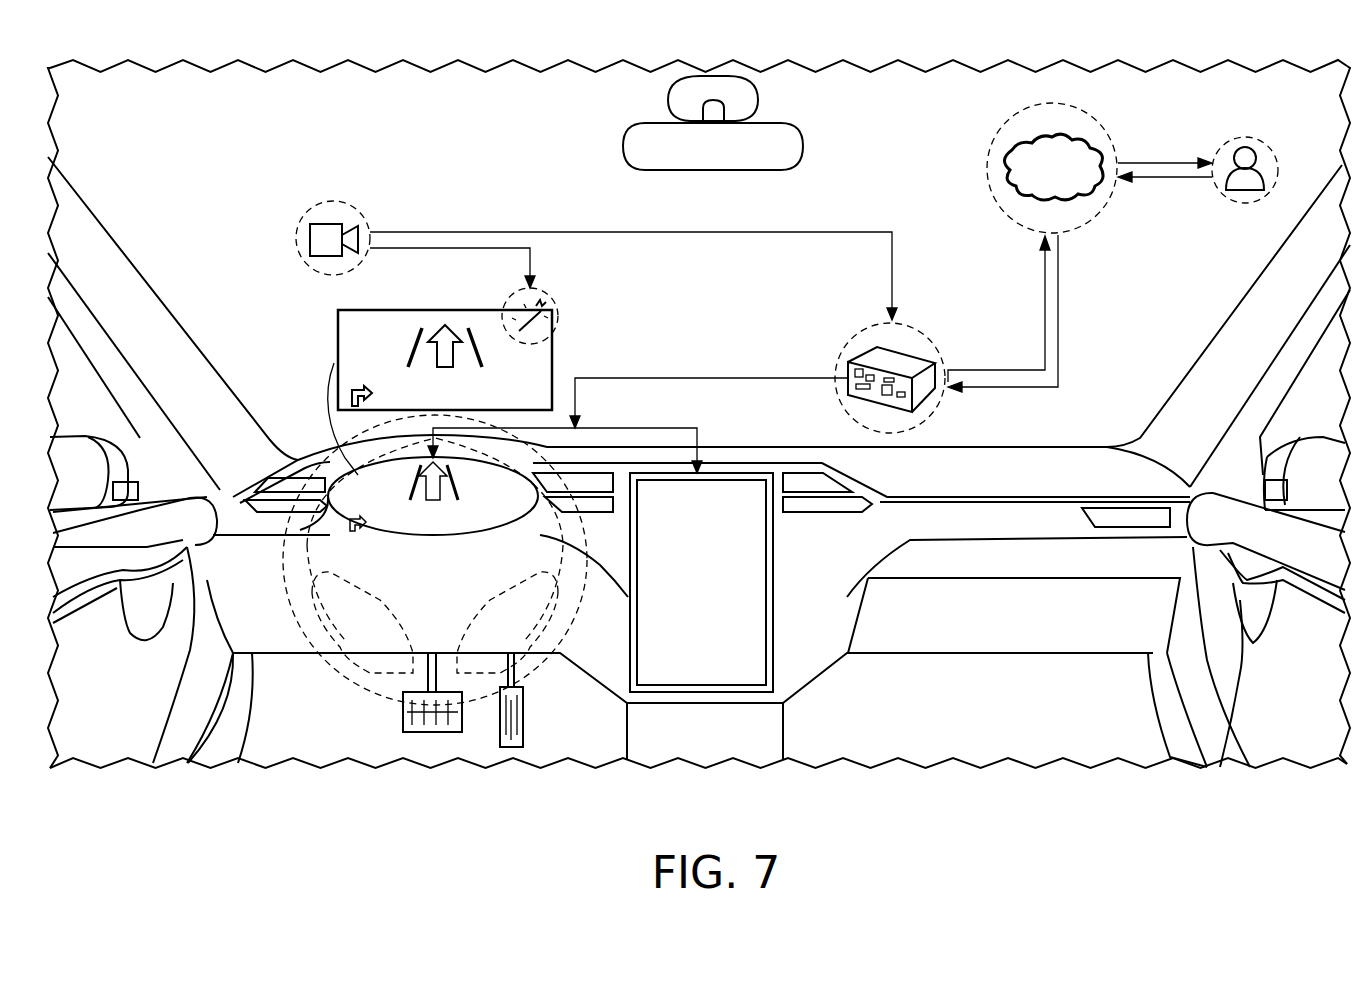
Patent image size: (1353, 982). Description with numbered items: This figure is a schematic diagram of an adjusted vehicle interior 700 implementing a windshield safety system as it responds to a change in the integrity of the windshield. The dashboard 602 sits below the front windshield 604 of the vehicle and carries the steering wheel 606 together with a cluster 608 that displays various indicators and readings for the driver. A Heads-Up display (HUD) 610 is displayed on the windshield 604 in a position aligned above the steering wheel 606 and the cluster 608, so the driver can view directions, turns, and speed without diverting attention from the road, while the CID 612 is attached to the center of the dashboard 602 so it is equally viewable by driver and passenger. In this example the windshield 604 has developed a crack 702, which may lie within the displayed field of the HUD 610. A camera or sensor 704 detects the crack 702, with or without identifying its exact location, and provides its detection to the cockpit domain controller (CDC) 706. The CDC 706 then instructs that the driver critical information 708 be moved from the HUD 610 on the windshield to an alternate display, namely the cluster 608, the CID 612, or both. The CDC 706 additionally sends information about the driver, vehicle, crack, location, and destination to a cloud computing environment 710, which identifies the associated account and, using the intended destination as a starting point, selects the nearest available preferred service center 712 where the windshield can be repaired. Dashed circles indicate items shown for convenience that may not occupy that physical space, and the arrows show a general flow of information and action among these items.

The adjusted vehicle interior 700 is at (734, 848).
The dashboard 602 is at (606, 452).
The front windshield 604 is at (400, 96).
The steering wheel 606 is at (352, 698).
The cluster 608 is at (362, 478).
The Heads-Up display (HUD) 610 is at (338, 340).
The CID 612 is at (733, 487).
The crack 702 is at (556, 304).
The camera or sensor 704 is at (340, 205).
The cockpit domain controller (CDC) 706 is at (848, 340).
The driver critical information 708 is at (425, 536).
The cloud computing environment 710 is at (988, 168).
The preferred service center 712 is at (1240, 136).